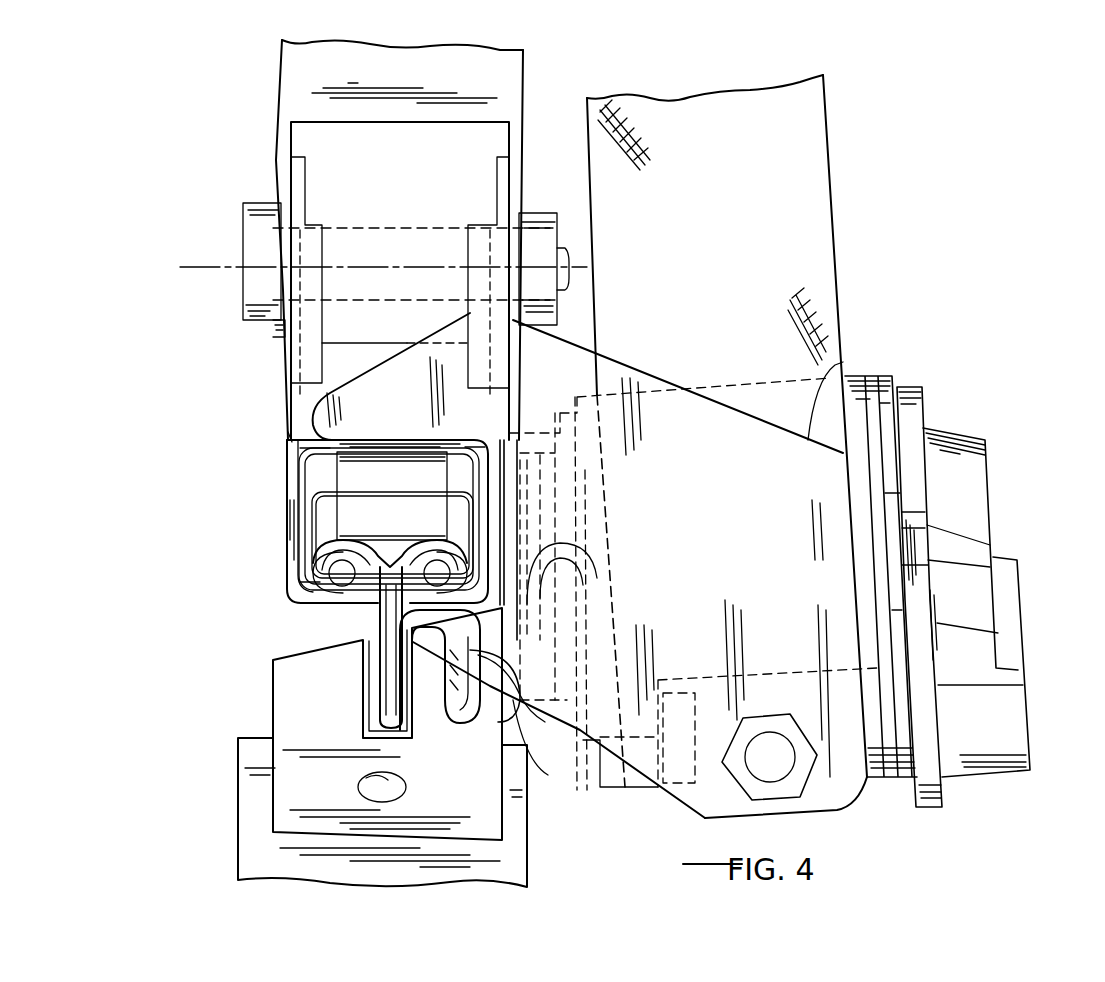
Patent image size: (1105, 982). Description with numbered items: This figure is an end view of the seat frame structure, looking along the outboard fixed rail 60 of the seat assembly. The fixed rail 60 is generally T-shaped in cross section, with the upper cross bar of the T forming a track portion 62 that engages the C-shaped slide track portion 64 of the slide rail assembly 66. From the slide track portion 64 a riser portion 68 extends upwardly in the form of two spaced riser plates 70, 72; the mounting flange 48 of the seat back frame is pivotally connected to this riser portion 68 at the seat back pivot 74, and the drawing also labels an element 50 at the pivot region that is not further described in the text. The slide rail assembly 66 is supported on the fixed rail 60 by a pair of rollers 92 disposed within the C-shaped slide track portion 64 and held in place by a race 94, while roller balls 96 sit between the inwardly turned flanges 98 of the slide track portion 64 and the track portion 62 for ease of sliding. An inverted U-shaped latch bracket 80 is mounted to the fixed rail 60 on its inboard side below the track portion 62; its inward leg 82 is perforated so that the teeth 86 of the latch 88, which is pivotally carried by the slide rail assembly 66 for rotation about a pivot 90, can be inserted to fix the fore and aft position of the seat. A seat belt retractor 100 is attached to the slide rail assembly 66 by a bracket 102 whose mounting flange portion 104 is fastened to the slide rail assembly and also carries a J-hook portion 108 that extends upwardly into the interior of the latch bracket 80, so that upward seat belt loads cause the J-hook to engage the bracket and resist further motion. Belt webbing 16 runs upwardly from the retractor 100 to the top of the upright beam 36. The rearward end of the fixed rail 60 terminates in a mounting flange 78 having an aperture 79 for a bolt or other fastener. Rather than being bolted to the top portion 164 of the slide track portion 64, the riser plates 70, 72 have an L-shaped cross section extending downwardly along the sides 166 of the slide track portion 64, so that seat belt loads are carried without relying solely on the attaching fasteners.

The belt webbing 16 is at (837, 200).
The upright beam 36 is at (281, 92).
The mounting flange 48 is at (511, 193).
The pivot pin 50 is at (205, 263).
The fixed rail 60 is at (366, 622).
The track portion 62 is at (290, 575).
The slide track portion 64 is at (290, 440).
The slide rail assembly 66 is at (275, 518).
The riser portion 68 is at (276, 416).
The riser plate 70 is at (287, 375).
The riser plate 72 is at (512, 410).
The seat back pivot 74 is at (243, 283).
The mounting flange 78 is at (290, 725).
The aperture 79 is at (358, 787).
The latch bracket 80 is at (443, 715).
The inward leg 82 is at (428, 710).
The teeth 86 is at (430, 690).
The latch 88 is at (521, 699).
The pivot 90 is at (600, 583).
The rollers 92 is at (290, 477).
The race 94 is at (357, 490).
The roller balls 96 is at (305, 586).
The inwardly turned flanges 98 is at (328, 594).
The seat belt retractor 100 is at (833, 783).
The bracket 102 is at (845, 376).
The mounting flange portion 104 is at (520, 510).
The J-hook portion 108 is at (555, 763).
The top portion 164 is at (387, 440).
The sides 166 is at (285, 542).